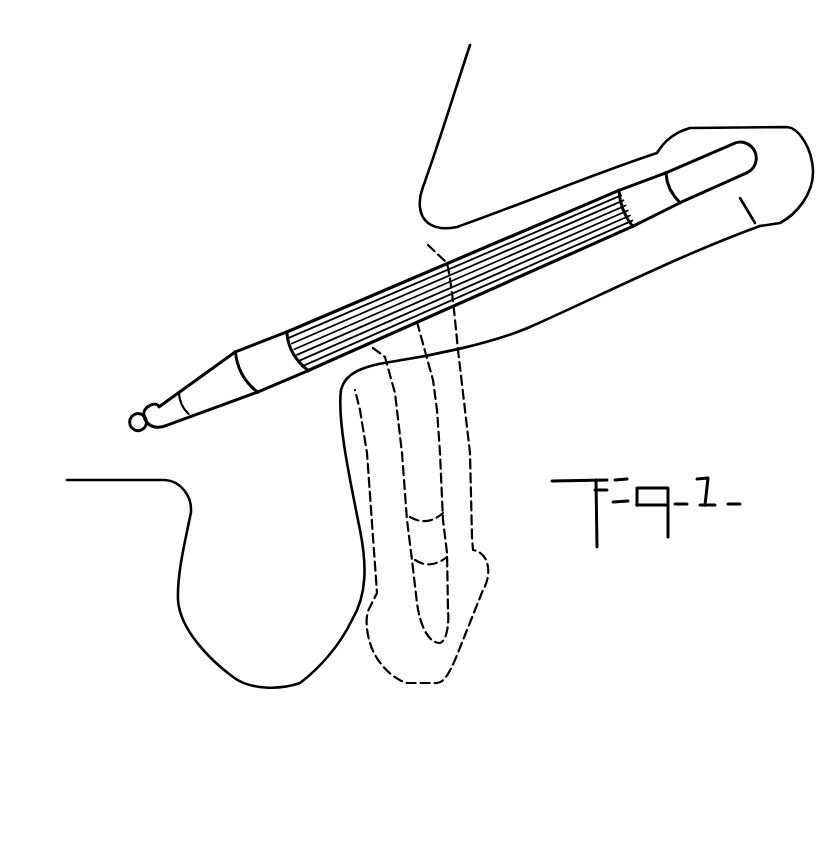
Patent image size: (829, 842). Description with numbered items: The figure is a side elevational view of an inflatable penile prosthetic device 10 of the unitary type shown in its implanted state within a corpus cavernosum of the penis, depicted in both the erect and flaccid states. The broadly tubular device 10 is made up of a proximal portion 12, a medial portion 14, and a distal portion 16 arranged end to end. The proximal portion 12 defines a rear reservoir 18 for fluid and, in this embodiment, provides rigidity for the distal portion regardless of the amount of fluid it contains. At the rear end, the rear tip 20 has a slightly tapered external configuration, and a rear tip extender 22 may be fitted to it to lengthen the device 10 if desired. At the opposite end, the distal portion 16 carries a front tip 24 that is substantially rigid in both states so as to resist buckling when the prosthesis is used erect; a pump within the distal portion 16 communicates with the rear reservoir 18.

The inflatable penile prosthetic device 10 is at (288, 236).
The proximal portion 12 is at (323, 368).
The medial portion 14 is at (449, 262).
The distal portion 16 is at (660, 177).
The rear reservoir 18 is at (263, 338).
The rear tip 20 is at (215, 380).
The rear tip extender 22 is at (157, 427).
The front tip 24 is at (752, 150).